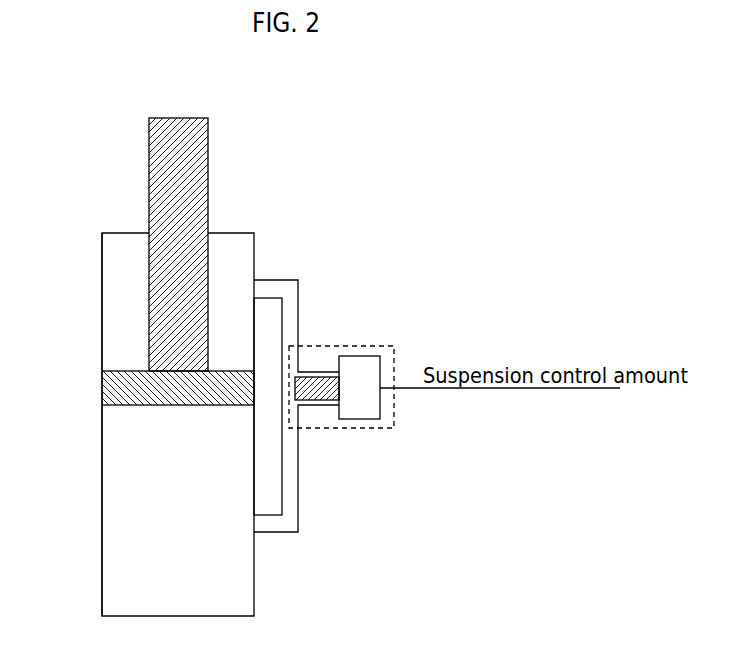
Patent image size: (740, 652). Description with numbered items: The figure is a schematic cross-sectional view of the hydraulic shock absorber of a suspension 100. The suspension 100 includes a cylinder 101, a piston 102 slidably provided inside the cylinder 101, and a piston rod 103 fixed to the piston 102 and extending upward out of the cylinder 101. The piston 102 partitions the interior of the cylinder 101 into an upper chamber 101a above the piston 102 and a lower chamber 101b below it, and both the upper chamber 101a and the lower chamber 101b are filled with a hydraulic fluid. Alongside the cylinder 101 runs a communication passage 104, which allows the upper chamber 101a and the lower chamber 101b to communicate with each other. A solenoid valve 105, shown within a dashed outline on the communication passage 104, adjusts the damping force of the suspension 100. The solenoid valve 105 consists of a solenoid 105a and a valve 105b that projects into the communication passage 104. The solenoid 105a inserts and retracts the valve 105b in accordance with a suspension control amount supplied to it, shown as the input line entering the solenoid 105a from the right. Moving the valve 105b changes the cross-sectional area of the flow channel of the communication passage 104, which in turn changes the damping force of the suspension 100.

The suspension 100 is at (380, 133).
The cylinder 101 is at (241, 233).
The upper chamber 101a is at (108, 308).
The lower chamber 101b is at (108, 495).
The piston 102 is at (104, 385).
The piston rod 103 is at (158, 170).
The communication passage 104 is at (298, 300).
The solenoid valve 105 is at (355, 348).
The solenoid 105a is at (380, 405).
The valve 105b is at (319, 385).